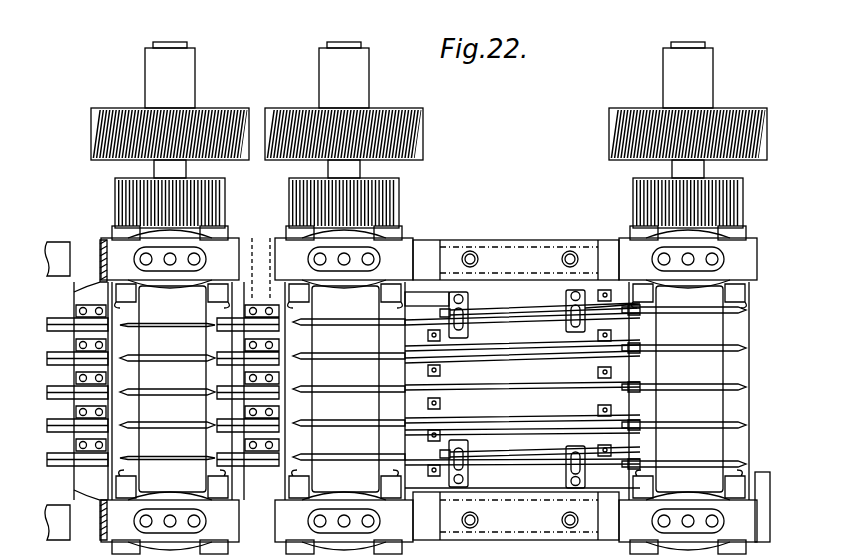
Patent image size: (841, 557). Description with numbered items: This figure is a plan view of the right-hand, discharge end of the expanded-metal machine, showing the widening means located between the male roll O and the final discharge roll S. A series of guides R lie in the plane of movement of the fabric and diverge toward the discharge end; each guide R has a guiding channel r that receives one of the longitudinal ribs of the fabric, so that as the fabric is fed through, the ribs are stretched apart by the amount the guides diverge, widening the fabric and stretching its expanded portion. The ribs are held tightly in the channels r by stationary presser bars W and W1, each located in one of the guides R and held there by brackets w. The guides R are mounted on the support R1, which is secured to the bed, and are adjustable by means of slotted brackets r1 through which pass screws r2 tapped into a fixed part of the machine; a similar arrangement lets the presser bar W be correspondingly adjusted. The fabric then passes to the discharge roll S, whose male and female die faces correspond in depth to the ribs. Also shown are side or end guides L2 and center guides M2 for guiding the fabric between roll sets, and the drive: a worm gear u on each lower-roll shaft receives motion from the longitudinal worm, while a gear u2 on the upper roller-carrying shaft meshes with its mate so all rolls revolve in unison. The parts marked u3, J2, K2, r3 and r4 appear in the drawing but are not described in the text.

The worm gear u is at (208, 110).
The gear u2 is at (116, 204).
The shaft u3 is at (348, 44).
The side or end guide L2 is at (284, 288).
The side plate J2 is at (58, 318).
The bar K2 is at (54, 424).
The center guide M2 is at (280, 406).
The male roll O is at (345, 389).
The final discharge roll S is at (689, 389).
The guide R is at (480, 274).
The support R1 is at (508, 496).
The bracket w is at (495, 314).
The presser bar W is at (506, 304).
The presser bar W1 is at (524, 462).
The guiding channel r is at (526, 424).
The slotted bracket r1 is at (445, 396).
The screw r2 is at (470, 365).
The rod r3 is at (592, 416).
The rod r4 is at (522, 361).